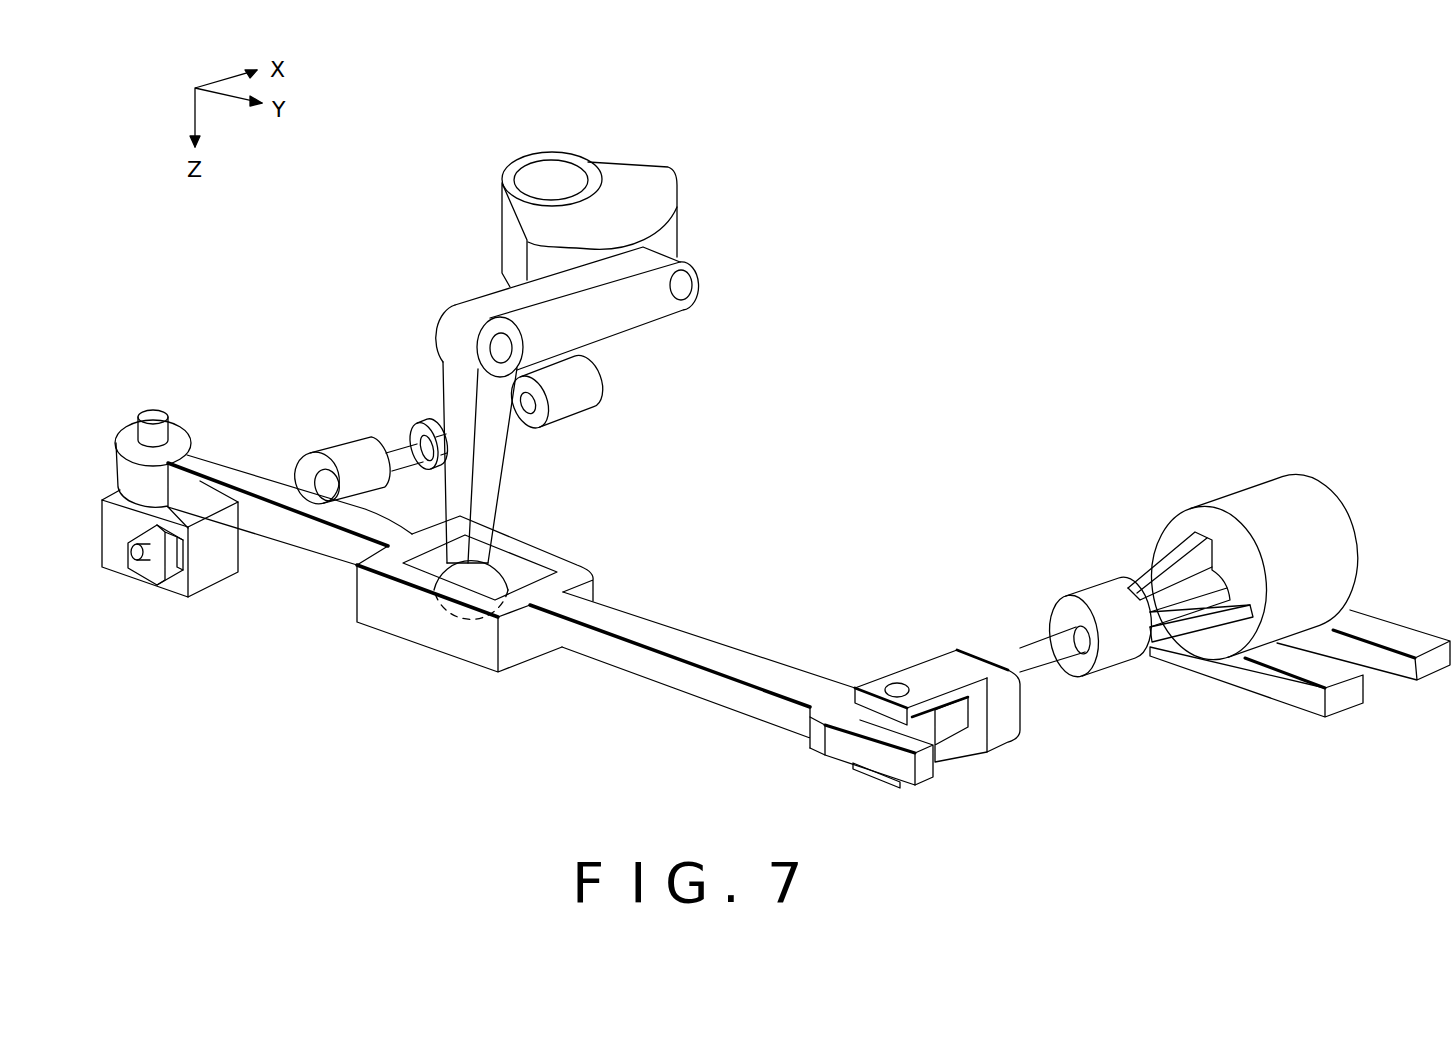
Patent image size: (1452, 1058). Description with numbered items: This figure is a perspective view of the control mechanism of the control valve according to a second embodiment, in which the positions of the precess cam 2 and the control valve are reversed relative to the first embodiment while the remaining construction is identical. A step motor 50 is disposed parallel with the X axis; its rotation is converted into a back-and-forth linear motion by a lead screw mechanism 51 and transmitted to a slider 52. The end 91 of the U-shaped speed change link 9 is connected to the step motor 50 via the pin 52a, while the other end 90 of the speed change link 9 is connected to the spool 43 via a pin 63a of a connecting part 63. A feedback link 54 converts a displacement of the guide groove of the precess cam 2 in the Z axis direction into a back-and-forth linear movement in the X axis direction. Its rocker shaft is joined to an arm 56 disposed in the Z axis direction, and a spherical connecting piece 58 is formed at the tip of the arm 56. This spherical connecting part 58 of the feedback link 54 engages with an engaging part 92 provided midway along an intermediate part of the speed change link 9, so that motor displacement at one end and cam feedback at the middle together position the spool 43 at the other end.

The precess cam 2 is at (658, 199).
The speed change link 9 is at (705, 688).
The spool 43 is at (587, 390).
The step motor 50 is at (1281, 487).
The lead screw mechanism 51 is at (1187, 590).
The slider 52 is at (1003, 660).
The pin 52a is at (897, 685).
The feedback link 54 is at (450, 300).
The arm 56 is at (487, 504).
The spherical connecting piece 58 is at (483, 582).
The connecting part 63 is at (122, 573).
The pin 63a is at (157, 412).
The end 90 is at (190, 437).
The end 91 is at (957, 742).
The engaging part 92 is at (533, 571).